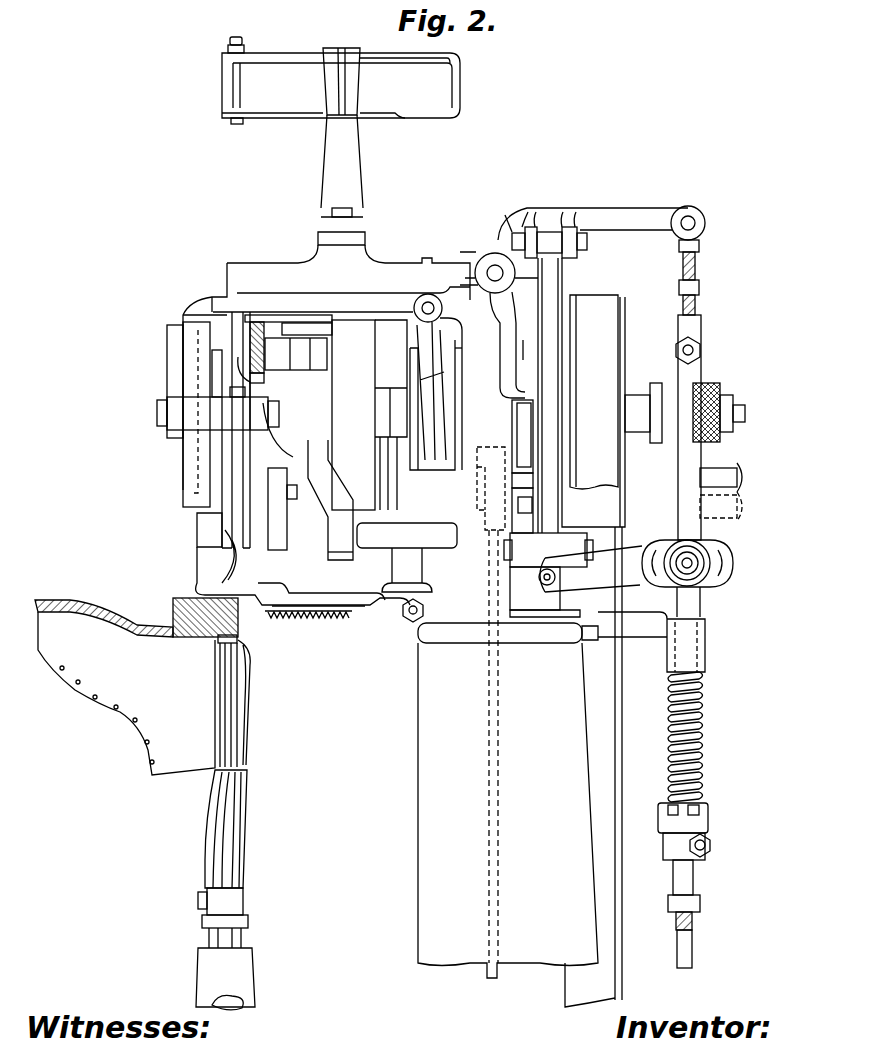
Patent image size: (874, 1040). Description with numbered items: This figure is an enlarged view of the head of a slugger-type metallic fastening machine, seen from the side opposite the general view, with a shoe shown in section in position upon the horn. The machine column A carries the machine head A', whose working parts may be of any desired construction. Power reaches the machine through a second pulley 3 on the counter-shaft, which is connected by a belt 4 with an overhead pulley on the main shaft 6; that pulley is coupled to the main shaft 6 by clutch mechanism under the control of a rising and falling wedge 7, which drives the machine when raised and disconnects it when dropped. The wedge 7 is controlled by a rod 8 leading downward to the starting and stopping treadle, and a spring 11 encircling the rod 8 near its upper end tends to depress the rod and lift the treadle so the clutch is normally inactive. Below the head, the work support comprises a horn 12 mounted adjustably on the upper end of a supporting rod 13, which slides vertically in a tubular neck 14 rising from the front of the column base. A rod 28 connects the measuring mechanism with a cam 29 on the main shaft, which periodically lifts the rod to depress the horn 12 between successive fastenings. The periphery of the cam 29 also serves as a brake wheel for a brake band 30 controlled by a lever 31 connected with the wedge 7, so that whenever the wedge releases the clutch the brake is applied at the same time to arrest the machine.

The machine column A is at (508, 800).
The machine head A' is at (317, 329).
The second pulley 3 is at (627, 338).
The belt 4 is at (583, 305).
The main shaft 6 is at (738, 408).
The wedge 7 is at (692, 386).
The rod 8 is at (688, 952).
The spring 11 is at (690, 730).
The horn 12 is at (212, 820).
The supporting rod 13 is at (240, 936).
The tubular neck 14 is at (252, 962).
The rod 28 is at (490, 707).
The cam 29 is at (537, 360).
The brake band 30 is at (548, 397).
The lever 31 is at (593, 212).